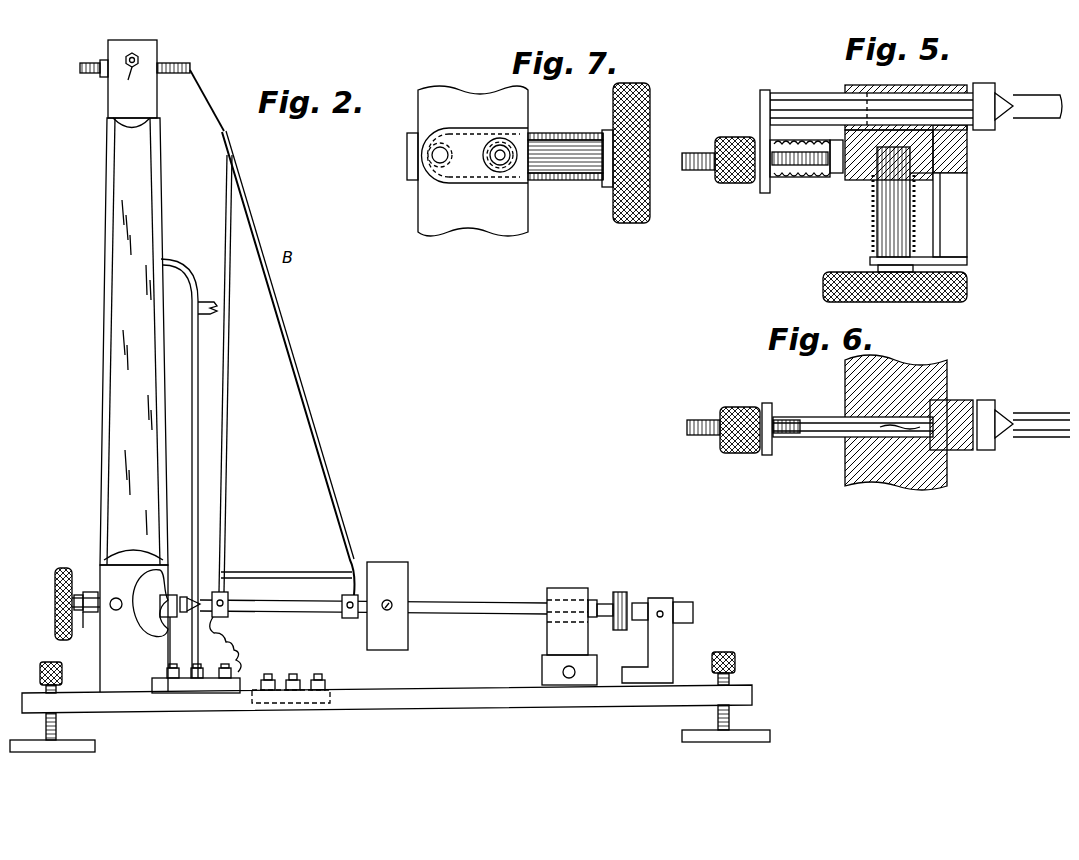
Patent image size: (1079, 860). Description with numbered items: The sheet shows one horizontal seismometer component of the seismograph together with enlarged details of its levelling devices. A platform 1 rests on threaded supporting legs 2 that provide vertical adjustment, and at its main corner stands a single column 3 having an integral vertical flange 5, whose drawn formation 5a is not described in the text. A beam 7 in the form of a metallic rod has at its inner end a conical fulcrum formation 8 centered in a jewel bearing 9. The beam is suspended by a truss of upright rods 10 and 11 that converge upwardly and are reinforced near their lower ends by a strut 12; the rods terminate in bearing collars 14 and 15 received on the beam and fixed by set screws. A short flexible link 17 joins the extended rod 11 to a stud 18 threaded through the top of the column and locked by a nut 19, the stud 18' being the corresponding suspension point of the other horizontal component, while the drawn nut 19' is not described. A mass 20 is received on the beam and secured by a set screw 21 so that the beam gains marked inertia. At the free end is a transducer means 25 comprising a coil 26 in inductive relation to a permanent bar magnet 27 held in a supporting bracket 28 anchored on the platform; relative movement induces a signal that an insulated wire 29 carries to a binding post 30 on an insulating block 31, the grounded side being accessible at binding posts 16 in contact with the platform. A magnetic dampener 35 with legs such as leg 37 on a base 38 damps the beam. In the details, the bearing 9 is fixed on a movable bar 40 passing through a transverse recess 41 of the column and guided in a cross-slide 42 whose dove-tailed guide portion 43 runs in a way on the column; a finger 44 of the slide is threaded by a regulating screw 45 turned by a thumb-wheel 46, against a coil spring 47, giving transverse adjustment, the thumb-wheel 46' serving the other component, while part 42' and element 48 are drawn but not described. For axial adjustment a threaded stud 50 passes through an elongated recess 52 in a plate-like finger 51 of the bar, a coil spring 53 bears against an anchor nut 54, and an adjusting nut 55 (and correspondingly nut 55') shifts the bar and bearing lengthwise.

In FIG. 2, the platform 1 is at (432, 697).
In FIG. 2, the supporting legs 2 is at (44, 745).
In FIG. 2, the column 3 is at (102, 366).
In FIG. 7, the column 3 is at (490, 98).
In FIG. 5, the column 3 is at (898, 88).
In FIG. 6, the column 3 is at (916, 362).
In FIG. 2, the vertical flange 5 is at (190, 344).
In FIG. 2, the hook of rod 5a is at (204, 300).
In FIG. 2, the beam 7 is at (464, 603).
In FIG. 5, the beam 7 is at (1046, 96).
In FIG. 6, the beam 7 is at (1045, 438).
In FIG. 2, the conical fulcrum formation 8 is at (193, 600).
In FIG. 5, the conical fulcrum formation 8 is at (1003, 98).
In FIG. 6, the conical fulcrum formation 8 is at (1003, 438).
In FIG. 2, the jewel bearing 9 is at (183, 597).
In FIG. 5, the jewel bearing 9 is at (984, 83).
In FIG. 6, the jewel bearing 9 is at (986, 450).
In FIG. 2, the upright rod 10 is at (227, 437).
In FIG. 2, the upright rod 11 is at (318, 434).
In FIG. 2, the strut 12 is at (290, 574).
In FIG. 2, the bearing collar 14 is at (226, 612).
In FIG. 2, the bearing collar 15 is at (352, 618).
In FIG. 2, the binding posts 16 is at (307, 701).
In FIG. 2, the flexible link 17 is at (211, 116).
In FIG. 2, the stud 18 is at (173, 54).
In FIG. 2, the stud 18' is at (128, 84).
In FIG. 2, the nut 19 is at (93, 56).
In FIG. 2, the clamp nut 19' is at (145, 46).
In FIG. 2, the mass 20 is at (389, 562).
In FIG. 2, the set screw 21 is at (387, 610).
In FIG. 2, the transducer means 25 is at (622, 583).
In FIG. 2, the coil 26 is at (626, 608).
In FIG. 2, the permanent bar magnet 27 is at (640, 603).
In FIG. 2, the supporting bracket 28 is at (673, 670).
In FIG. 2, the insulated wire 29 is at (238, 644).
In FIG. 2, the binding post 30 is at (252, 671).
In FIG. 2, the insulating block 31 is at (194, 695).
In FIG. 2, the magnetic dampener 35 is at (554, 579).
In FIG. 2, the leg 37 is at (547, 624).
In FIG. 2, the base 38 is at (542, 672).
In FIG. 7, the movable bar 40 is at (407, 157).
In FIG. 5, the movable bar 40 is at (800, 93).
In FIG. 6, the movable bar 40 is at (815, 437).
In FIG. 7, the transverse recess 41 is at (441, 140).
In FIG. 5, the transverse recess 41 is at (868, 92).
In FIG. 7, the cross-slide 42 is at (594, 139).
In FIG. 5, the cross-slide 42 is at (958, 215).
In FIG. 6, the cross-slide 42 is at (957, 409).
In FIG. 2, the housing shaft 42' is at (86, 589).
In FIG. 5, the guide portion 43 is at (941, 228).
In FIG. 2, the finger 44 is at (168, 606).
In FIG. 7, the finger 44 is at (606, 180).
In FIG. 5, the finger 44 is at (870, 260).
In FIG. 7, the regulating screw 45 is at (562, 145).
In FIG. 5, the regulating screw 45 is at (876, 228).
In FIG. 2, the thumb-wheel 46 is at (138, 612).
In FIG. 7, the thumb-wheel 46 is at (631, 137).
In FIG. 5, the thumb-wheel 46 is at (914, 287).
In FIG. 2, the thumb-wheel 46' is at (60, 588).
In FIG. 7, the coil spring 47 is at (550, 181).
In FIG. 5, the coil spring 47 is at (872, 210).
In FIG. 6, the bore 48 is at (925, 427).
In FIG. 7, the threaded stud 50 is at (497, 162).
In FIG. 5, the threaded stud 50 is at (700, 153).
In FIG. 6, the threaded stud 50 is at (705, 435).
In FIG. 2, the plate-like finger 51 is at (90, 627).
In FIG. 7, the plate-like finger 51 is at (478, 134).
In FIG. 5, the plate-like finger 51 is at (765, 194).
In FIG. 6, the plate-like finger 51 is at (767, 403).
In FIG. 5, the elongated recess 52 is at (800, 140).
In FIG. 6, the elongated recess 52 is at (770, 440).
In FIG. 5, the coil spring 53 is at (792, 173).
In FIG. 5, the anchor nut 54 is at (836, 173).
In FIG. 2, the adjusting nut 55 is at (78, 628).
In FIG. 7, the adjusting nut 55 is at (502, 174).
In FIG. 5, the adjusting nut 55 is at (735, 145).
In FIG. 6, the adjusting nut 55 is at (740, 415).
In FIG. 2, the adjusting nut 55' is at (118, 592).